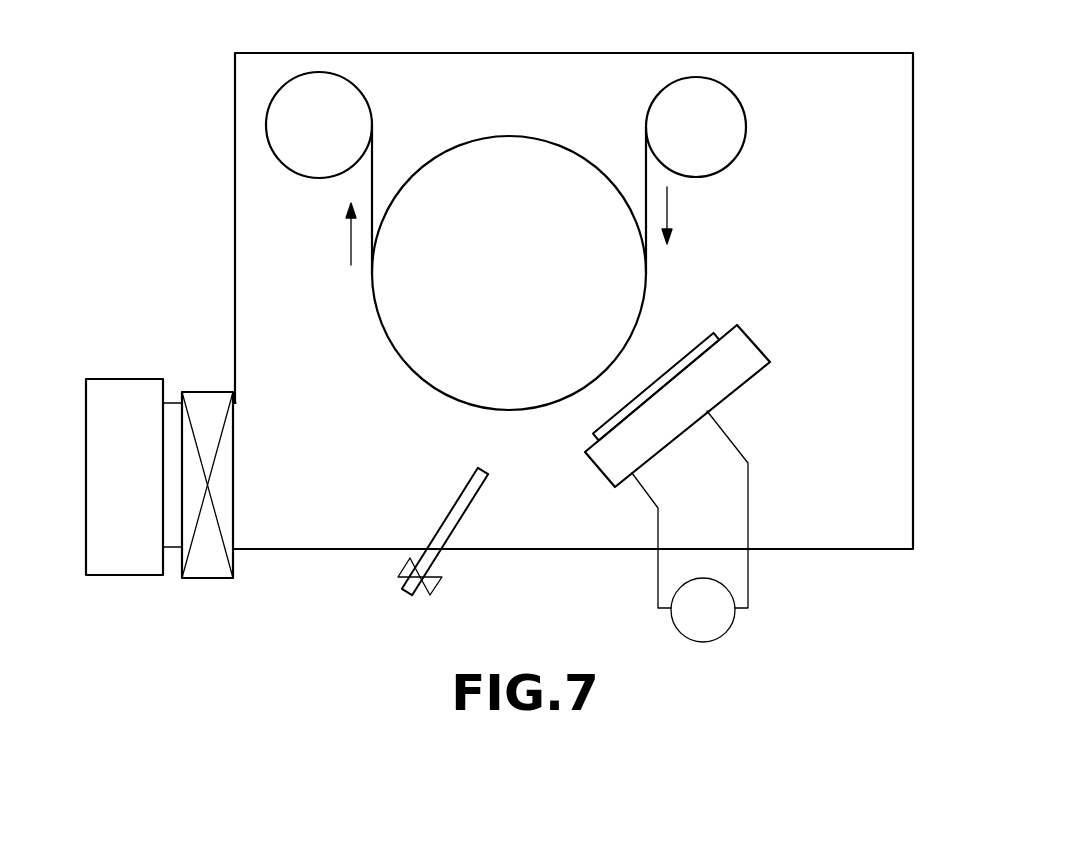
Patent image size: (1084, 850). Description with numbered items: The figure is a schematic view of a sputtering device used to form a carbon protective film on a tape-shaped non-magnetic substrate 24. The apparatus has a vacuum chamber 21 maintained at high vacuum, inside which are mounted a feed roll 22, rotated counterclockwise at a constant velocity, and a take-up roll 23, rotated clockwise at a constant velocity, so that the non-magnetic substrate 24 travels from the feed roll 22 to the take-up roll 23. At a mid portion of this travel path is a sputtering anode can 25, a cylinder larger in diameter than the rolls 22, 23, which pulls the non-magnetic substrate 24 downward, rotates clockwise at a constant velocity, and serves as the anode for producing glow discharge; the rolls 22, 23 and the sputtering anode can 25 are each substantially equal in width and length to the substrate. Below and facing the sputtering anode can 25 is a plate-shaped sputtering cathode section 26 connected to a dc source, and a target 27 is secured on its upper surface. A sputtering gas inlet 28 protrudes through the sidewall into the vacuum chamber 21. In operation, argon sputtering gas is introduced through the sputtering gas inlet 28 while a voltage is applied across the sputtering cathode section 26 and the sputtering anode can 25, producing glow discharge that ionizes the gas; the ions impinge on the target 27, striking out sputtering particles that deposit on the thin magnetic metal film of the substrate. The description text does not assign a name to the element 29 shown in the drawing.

The vacuum chamber 21 is at (913, 433).
The feed roll 22 is at (746, 130).
The take-up roll 23 is at (295, 173).
The non-magnetic substrate 24 is at (368, 182).
The sputtering anode can 25 is at (432, 382).
The sputtering cathode section 26 is at (610, 465).
The target 27 is at (722, 323).
The sputtering gas inlet 28 is at (452, 518).
The vacuum pump 29 is at (129, 558).